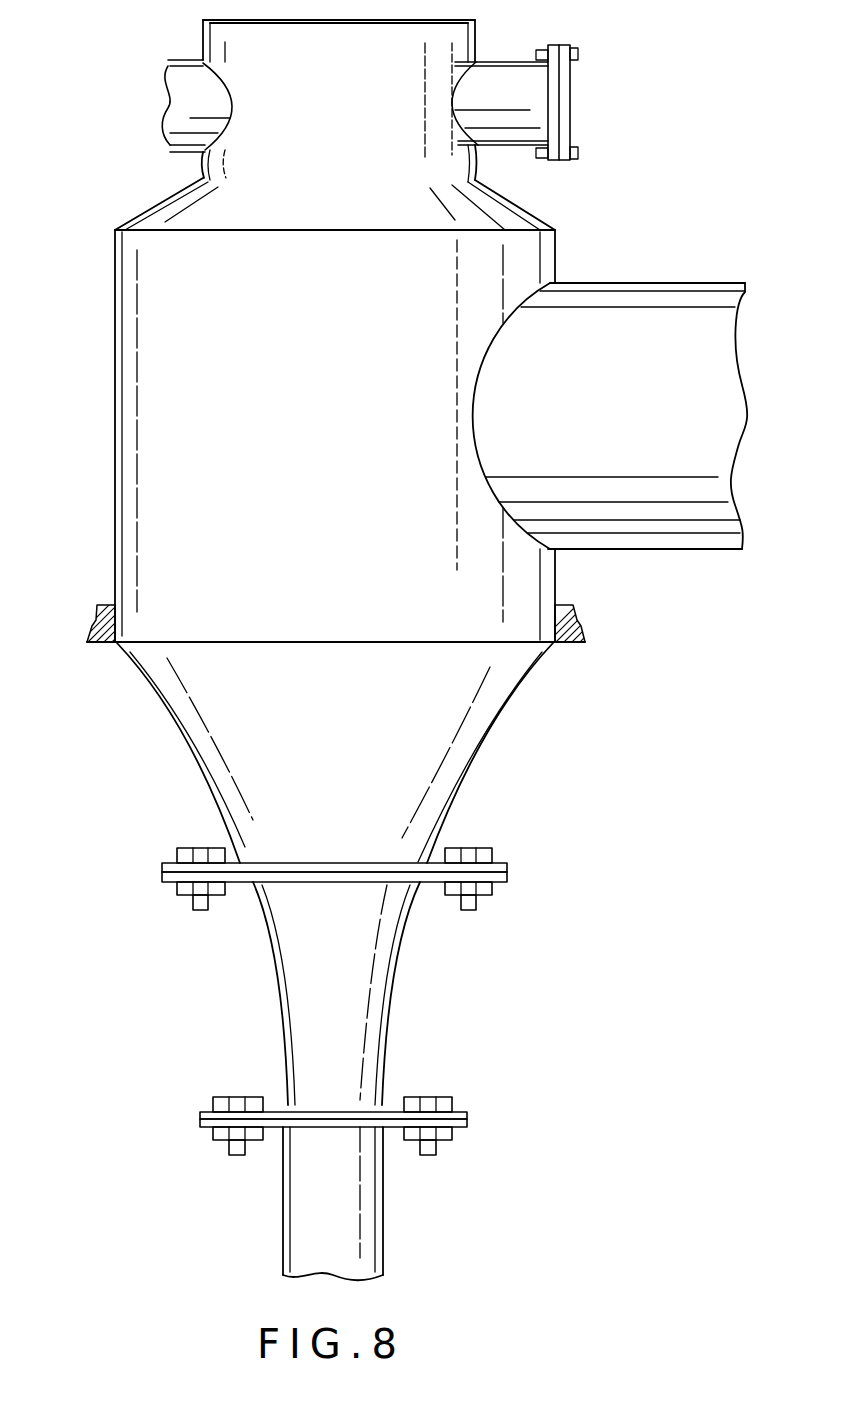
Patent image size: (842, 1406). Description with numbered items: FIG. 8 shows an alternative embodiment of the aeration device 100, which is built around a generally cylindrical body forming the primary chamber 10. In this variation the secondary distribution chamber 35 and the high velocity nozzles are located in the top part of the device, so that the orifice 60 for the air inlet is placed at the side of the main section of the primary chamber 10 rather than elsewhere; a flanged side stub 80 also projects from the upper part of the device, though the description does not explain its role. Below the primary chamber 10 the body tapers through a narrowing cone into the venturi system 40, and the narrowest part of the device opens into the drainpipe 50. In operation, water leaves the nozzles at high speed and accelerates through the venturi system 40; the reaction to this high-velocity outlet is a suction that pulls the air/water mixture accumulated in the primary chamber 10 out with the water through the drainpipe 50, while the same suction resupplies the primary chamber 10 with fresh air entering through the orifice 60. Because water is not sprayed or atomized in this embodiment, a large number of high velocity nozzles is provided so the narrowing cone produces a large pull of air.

The aeration device 100 is at (88, 418).
The primary chamber 10 is at (304, 419).
The secondary distribution chamber 35 is at (313, 63).
The flanged nozzle 80 is at (545, 103).
The orifice 60 is at (735, 442).
The venturi system 40 is at (342, 1013).
The drainpipe 50 is at (352, 1232).